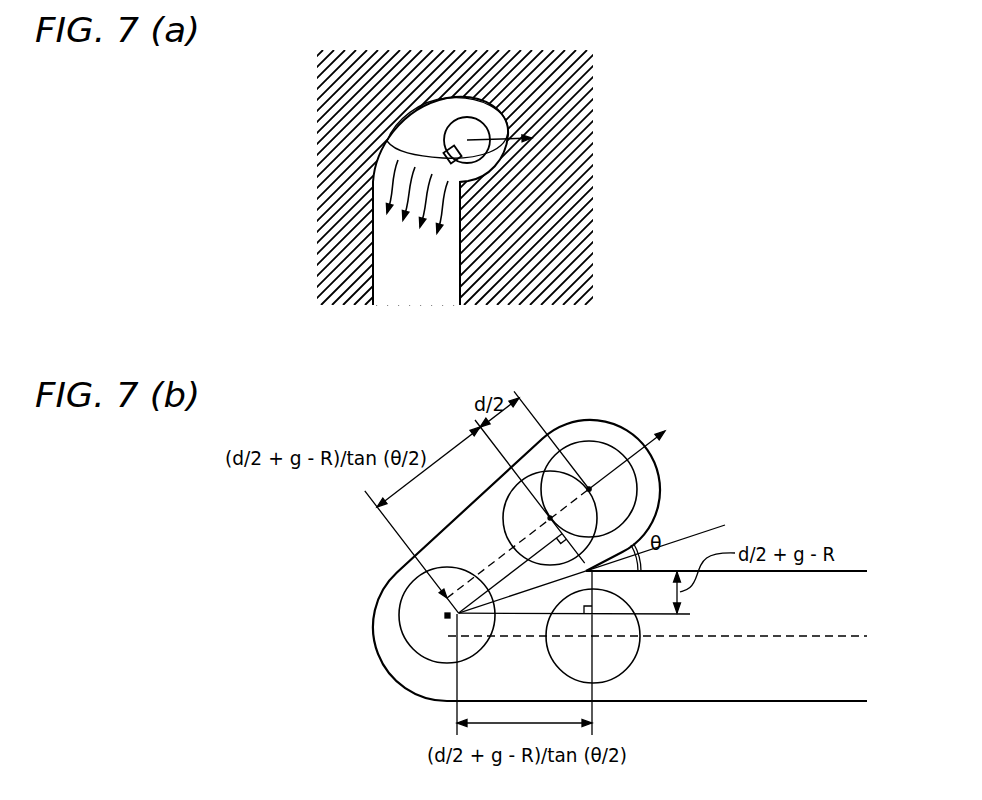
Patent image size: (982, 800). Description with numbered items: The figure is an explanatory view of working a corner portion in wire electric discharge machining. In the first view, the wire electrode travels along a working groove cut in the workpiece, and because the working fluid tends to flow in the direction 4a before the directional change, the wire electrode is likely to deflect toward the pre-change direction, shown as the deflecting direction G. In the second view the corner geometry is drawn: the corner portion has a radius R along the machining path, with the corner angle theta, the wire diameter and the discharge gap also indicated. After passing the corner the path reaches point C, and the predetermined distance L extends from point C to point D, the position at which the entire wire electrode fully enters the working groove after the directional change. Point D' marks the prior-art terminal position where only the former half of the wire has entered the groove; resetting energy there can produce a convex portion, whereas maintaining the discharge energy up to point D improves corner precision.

The direction of working fluid flow 4a is at (378, 181).
The deflecting direction G is at (388, 142).
The point after passing the corner portion C is at (440, 612).
The point at which the entire wire electrode fully enters the working groove D is at (538, 560).
The point at which the former half of the wire electrode fully enters the working gr D' is at (521, 518).
The radius of the corner portion R is at (440, 620).